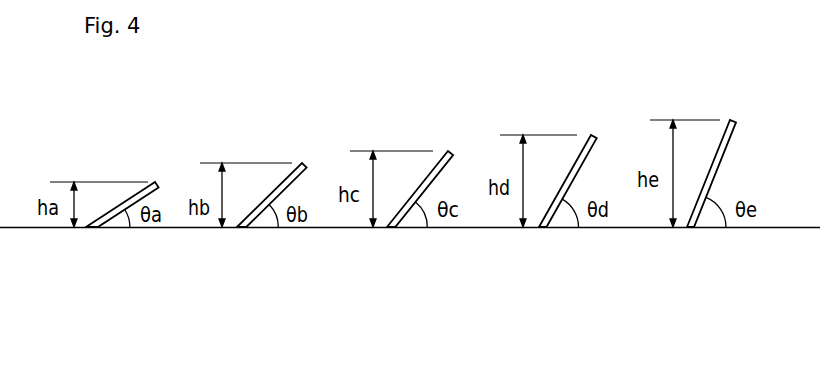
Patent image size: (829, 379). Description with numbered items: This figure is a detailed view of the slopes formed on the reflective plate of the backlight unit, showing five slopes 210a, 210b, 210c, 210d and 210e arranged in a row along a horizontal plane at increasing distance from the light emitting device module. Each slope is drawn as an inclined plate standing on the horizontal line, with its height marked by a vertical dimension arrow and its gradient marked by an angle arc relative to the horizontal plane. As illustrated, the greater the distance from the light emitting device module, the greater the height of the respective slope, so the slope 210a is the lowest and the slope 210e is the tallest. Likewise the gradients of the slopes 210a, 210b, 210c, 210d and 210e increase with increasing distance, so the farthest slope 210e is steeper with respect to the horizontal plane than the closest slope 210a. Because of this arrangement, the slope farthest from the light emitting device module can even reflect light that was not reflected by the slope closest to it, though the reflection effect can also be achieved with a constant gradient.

The slope 210a is at (115, 227).
The slope 210b is at (262, 227).
The slope 210c is at (410, 227).
The slope 210d is at (557, 227).
The slope 210e is at (705, 227).